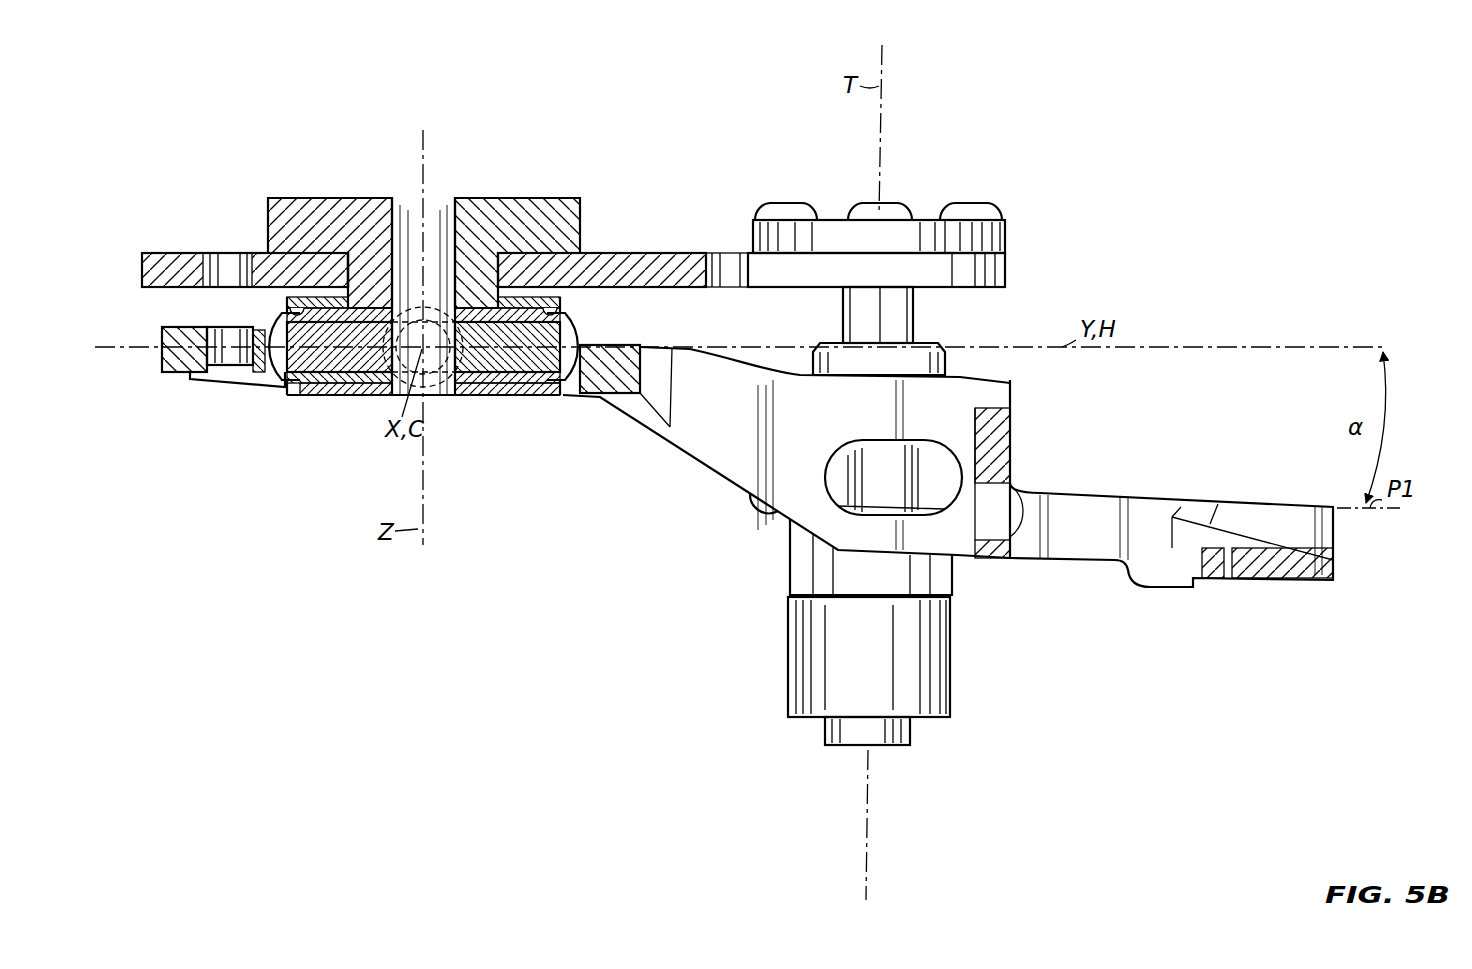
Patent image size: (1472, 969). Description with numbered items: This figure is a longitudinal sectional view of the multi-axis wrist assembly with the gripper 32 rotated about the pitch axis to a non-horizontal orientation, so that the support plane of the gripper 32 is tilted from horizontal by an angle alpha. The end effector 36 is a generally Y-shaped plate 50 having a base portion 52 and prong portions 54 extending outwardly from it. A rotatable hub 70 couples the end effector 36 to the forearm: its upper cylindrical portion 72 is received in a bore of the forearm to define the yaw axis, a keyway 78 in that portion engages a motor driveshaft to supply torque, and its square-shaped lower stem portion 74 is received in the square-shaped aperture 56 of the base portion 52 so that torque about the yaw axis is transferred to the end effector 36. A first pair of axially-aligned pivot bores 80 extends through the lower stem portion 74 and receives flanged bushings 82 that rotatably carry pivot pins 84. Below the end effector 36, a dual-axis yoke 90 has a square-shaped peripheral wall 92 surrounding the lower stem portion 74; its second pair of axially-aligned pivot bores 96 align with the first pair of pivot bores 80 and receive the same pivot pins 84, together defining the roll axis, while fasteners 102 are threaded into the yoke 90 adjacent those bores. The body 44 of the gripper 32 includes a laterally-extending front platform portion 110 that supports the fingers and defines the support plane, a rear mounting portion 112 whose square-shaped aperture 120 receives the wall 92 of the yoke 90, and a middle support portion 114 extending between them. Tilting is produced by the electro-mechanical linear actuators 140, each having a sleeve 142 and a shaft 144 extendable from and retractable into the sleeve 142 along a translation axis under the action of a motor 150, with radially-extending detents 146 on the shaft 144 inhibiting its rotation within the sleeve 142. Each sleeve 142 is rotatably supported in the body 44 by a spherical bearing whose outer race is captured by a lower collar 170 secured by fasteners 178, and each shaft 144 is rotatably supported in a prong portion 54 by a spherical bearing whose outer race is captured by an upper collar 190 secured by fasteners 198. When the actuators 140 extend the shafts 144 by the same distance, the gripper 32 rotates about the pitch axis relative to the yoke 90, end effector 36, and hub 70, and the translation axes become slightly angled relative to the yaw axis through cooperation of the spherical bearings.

The gripper 32 is at (155, 336).
The end effector 36 is at (137, 249).
The body 44 is at (170, 378).
The plate 50 is at (670, 250).
The base portion 52 is at (142, 270).
The prong portions 54 is at (1008, 267).
The square-shaped aperture 56 is at (348, 268).
The hub 70 is at (262, 212).
The upper cylindrical portion 72 is at (583, 232).
The lower stem portion 74 is at (369, 398).
The keyway 78 is at (455, 208).
The first pair of axially-aligned pivot bores 80 is at (477, 382).
The flanged bushings 82 is at (343, 388).
The pivot pins 84 is at (298, 393).
The dual-axis yoke 90 is at (305, 397).
The peripheral wall 92 is at (543, 362).
The second pair of axially-aligned pivot bores 96 is at (273, 345).
The fasteners 102 is at (280, 320).
The front platform portion 110 is at (1336, 546).
The rear mounting portion 112 is at (162, 358).
The middle support portion 114 is at (1012, 409).
The square-shaped aperture 120 is at (276, 386).
The linear actuators 140 is at (801, 733).
The sleeve 142 is at (940, 346).
The shaft 144 is at (915, 301).
The detents 146 is at (843, 310).
The motor 150 is at (788, 663).
The lower collar 170 is at (742, 494).
The fasteners 178 is at (772, 519).
The upper collar 190 is at (1008, 236).
The fasteners 198 is at (790, 202).